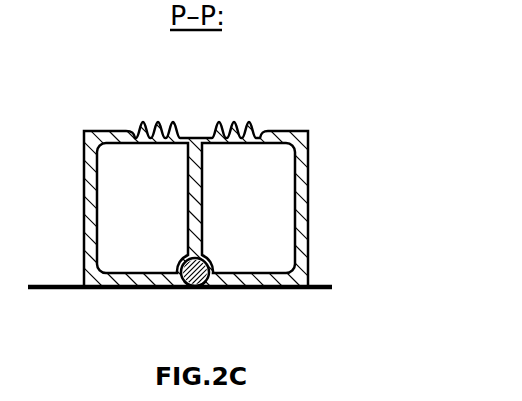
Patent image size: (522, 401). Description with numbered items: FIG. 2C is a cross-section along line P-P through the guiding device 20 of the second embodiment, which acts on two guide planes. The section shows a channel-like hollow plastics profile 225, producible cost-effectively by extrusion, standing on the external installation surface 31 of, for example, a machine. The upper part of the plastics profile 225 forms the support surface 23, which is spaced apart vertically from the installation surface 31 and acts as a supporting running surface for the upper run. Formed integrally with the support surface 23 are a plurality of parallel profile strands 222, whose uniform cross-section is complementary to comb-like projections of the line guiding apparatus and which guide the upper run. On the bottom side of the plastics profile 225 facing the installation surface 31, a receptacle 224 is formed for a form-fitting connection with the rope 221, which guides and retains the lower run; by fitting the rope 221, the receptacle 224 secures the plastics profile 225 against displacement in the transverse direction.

The guiding device 20 is at (142, 98).
The profile strands 222 is at (235, 128).
The support surface 23 is at (280, 130).
The channel-like plastics profile 225 is at (300, 204).
The rope 221 is at (197, 288).
The receptacle 224 is at (207, 292).
The installation surface 31 is at (45, 284).